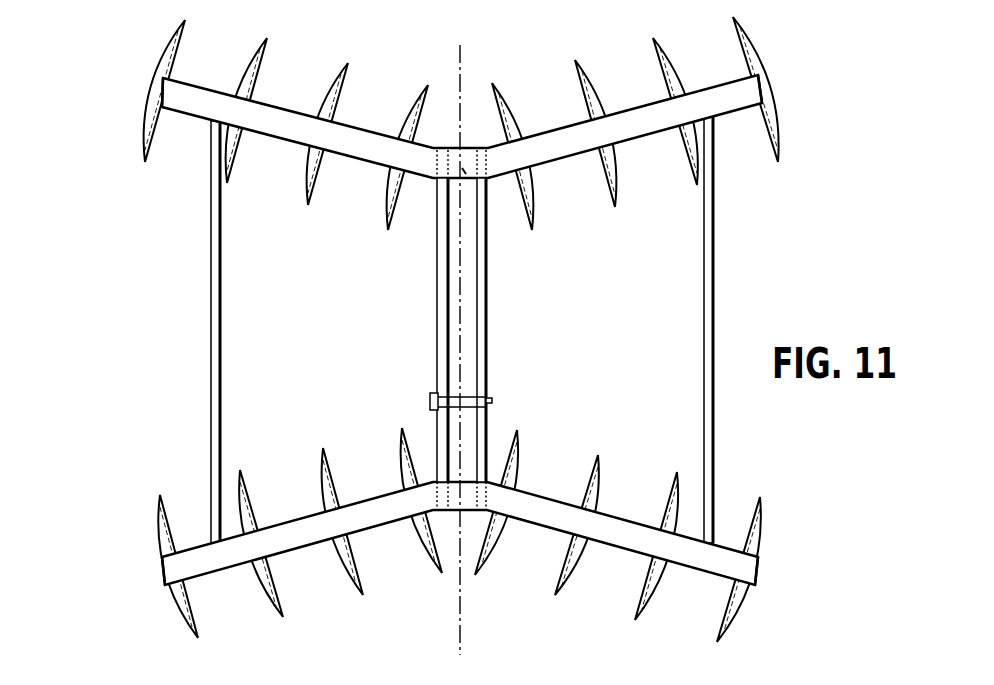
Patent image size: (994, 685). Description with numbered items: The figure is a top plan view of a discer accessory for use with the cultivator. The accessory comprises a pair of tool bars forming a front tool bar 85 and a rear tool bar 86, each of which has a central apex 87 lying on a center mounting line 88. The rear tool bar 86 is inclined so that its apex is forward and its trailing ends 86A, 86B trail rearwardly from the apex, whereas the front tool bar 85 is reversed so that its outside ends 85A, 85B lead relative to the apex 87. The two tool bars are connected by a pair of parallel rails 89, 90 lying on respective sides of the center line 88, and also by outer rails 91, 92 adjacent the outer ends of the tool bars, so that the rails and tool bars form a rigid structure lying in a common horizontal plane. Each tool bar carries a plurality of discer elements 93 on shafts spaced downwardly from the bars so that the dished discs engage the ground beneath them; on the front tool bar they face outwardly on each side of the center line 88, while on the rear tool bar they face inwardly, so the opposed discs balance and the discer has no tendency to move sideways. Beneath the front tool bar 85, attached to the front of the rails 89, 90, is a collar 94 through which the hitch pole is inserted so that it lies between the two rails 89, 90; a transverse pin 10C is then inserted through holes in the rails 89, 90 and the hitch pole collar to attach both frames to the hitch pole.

The front tool bar 85 is at (300, 110).
The outside end of front tool bar 85A is at (168, 90).
The outside end of front tool bar 85B is at (758, 78).
The rear tool bar 86 is at (378, 520).
The trailing end of rear tool bar 86A is at (168, 572).
The trailing end of rear tool bar 86B is at (757, 570).
The central apex 87 is at (455, 178).
The center mounting line 88 is at (460, 349).
The parallel rail 89 is at (437, 318).
The parallel rail 90 is at (487, 320).
The outer rail 91 is at (715, 292).
The outer rail 92 is at (211, 262).
The discer elements 93 is at (765, 163).
The collar 94 is at (462, 168).
The transverse pin 10C is at (430, 403).